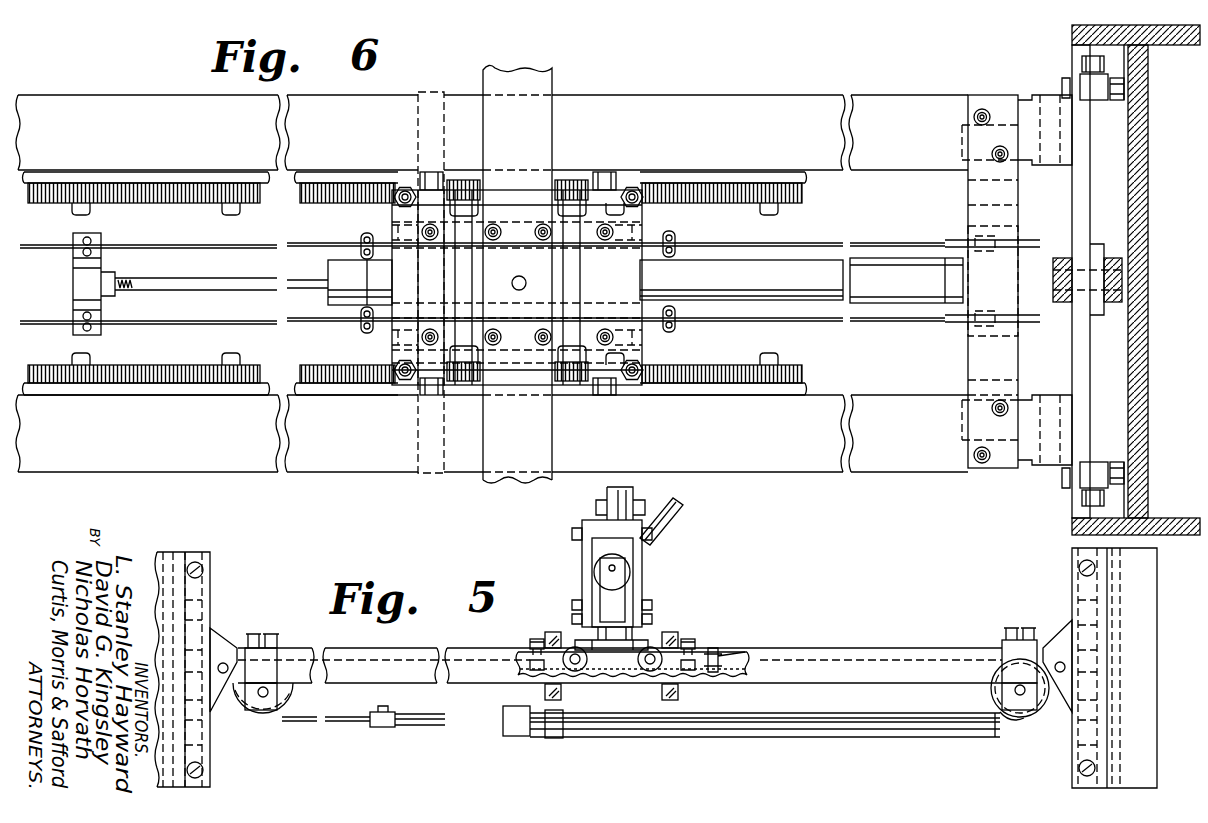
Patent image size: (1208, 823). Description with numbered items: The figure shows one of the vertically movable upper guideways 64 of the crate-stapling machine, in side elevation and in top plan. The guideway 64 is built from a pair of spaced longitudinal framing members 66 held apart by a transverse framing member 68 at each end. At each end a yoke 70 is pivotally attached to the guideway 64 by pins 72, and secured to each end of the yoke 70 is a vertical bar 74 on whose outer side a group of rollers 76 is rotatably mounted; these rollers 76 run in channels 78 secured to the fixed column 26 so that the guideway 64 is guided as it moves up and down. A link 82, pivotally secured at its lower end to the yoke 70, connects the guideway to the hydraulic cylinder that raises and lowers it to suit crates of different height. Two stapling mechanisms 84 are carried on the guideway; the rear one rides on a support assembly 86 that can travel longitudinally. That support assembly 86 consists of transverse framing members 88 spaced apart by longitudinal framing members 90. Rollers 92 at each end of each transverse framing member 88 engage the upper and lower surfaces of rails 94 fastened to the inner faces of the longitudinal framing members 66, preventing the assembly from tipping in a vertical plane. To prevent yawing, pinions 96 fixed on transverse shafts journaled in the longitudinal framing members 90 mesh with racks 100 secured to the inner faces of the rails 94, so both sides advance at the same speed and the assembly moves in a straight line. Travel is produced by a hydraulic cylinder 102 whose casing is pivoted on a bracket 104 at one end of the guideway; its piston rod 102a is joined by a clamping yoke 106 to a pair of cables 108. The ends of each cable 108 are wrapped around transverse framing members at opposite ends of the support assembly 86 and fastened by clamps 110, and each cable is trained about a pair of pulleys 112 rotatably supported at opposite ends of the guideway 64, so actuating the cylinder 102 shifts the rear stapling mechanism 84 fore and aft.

In FIG. 6, the fixed column 26 is at (1148, 260).
In FIG. 5, the fixed column 26 is at (158, 552).
In FIG. 6, the upper guideway 64 is at (777, 78).
In FIG. 5, the upper guideway 64 is at (826, 634).
In FIG. 6, the longitudinal framing member 66 is at (684, 102).
In FIG. 5, the longitudinal framing member 66 is at (396, 652).
In FIG. 6, the transverse framing member 68 is at (968, 194).
In FIG. 5, the transverse framing member 68 is at (278, 640).
In FIG. 6, the yoke 70 is at (1072, 212).
In FIG. 5, the yoke 70 is at (224, 640).
In FIG. 6, the pin 72 is at (1050, 98).
In FIG. 5, the pin 72 is at (240, 700).
In FIG. 6, the vertical bar 74 is at (1096, 100).
In FIG. 6, the roller 76 is at (1082, 63).
In FIG. 6, the channel 78 is at (1120, 60).
In FIG. 6, the link 82 is at (1110, 258).
In FIG. 5, the link 82 is at (1072, 568).
In FIG. 5, the stapling mechanism 84 is at (664, 549).
In FIG. 6, the support assembly 86 is at (585, 167).
In FIG. 5, the support assembly 86 is at (654, 626).
In FIG. 6, the transverse framing member 88 is at (422, 274).
In FIG. 6, the longitudinal framing member 90 is at (484, 248).
In FIG. 6, the roller 92 is at (440, 175).
In FIG. 5, the roller 92 is at (546, 636).
In FIG. 6, the rail 94 is at (806, 188).
In FIG. 6, the pinion 96 is at (478, 186).
In FIG. 5, the pinion 96 is at (637, 660).
In FIG. 6, the rack 100 is at (350, 198).
In FIG. 5, the rack 100 is at (596, 674).
In FIG. 6, the hydraulic cylinder 102 is at (326, 296).
In FIG. 5, the hydraulic cylinder 102 is at (617, 728).
In FIG. 6, the piston rod 102a is at (178, 284).
In FIG. 5, the piston rod 102a is at (424, 728).
In FIG. 5, the bracket 104 is at (1018, 724).
In FIG. 6, the clamping yoke 106 is at (102, 262).
In FIG. 6, the cable 108 is at (162, 252).
In FIG. 6, the clamp 110 is at (360, 240).
In FIG. 5, the clamp 110 is at (722, 652).
In FIG. 6, the pulley 112 is at (946, 238).
In FIG. 5, the pulley 112 is at (280, 698).